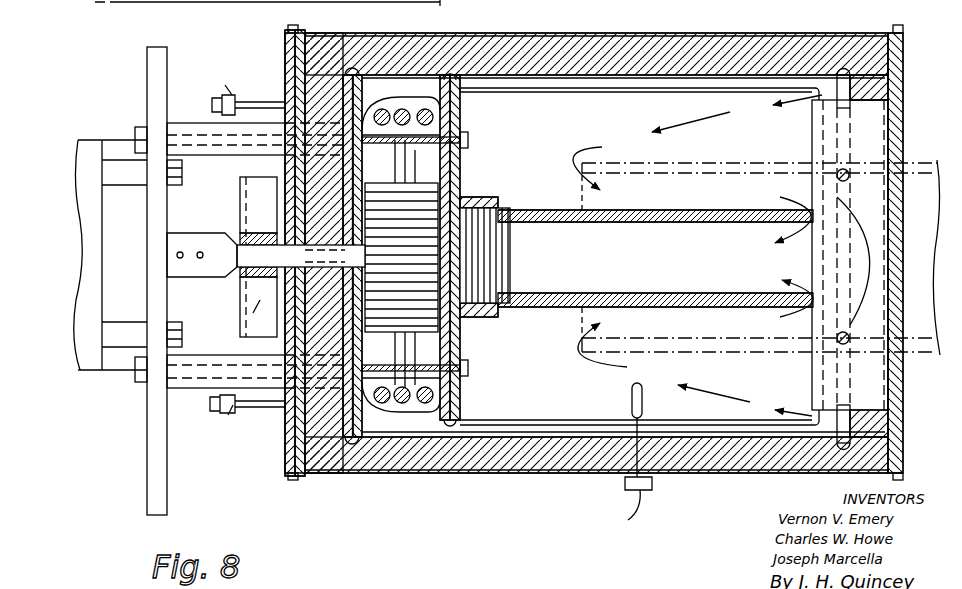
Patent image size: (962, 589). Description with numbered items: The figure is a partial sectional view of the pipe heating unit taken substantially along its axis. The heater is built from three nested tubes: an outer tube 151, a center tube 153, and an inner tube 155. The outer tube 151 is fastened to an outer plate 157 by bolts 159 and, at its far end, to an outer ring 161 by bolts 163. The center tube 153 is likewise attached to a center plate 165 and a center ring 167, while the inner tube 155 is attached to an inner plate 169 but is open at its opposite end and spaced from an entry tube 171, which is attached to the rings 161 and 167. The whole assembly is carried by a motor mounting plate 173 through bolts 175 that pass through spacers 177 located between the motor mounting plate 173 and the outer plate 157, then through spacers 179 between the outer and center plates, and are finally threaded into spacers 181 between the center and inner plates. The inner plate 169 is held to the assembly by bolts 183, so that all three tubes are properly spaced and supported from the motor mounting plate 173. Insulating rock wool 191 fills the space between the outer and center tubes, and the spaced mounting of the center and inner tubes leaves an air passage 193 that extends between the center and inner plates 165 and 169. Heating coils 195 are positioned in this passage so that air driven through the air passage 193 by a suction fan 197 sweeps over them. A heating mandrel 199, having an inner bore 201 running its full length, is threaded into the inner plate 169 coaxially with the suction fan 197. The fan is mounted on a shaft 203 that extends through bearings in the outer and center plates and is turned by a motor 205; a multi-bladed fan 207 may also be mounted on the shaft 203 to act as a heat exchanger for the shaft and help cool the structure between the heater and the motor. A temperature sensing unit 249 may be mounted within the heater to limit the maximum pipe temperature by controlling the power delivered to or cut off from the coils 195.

The outer tube 151 is at (580, 33).
The center tube 153 is at (627, 78).
The inner tube 155 is at (577, 93).
The outer plate 157 is at (285, 48).
The bolts 159 is at (296, 28).
The outer ring 161 is at (896, 66).
The bolts 163 is at (897, 28).
The center plate 165 is at (363, 78).
The center ring 167 is at (852, 97).
The inner plate 169 is at (445, 178).
The entry tube 171 is at (873, 328).
The motor mounting plate 173 is at (160, 58).
The bolts 175 is at (136, 125).
The spacers 177 is at (205, 152).
The spacers 179 is at (285, 180).
The spacers 181 is at (400, 152).
The bolts 183 is at (466, 135).
The rock wool 191 is at (700, 53).
The air passage 193 is at (737, 88).
The heating coils 195 is at (390, 397).
The suction fan 197 is at (418, 207).
The heating mandrel 199 is at (540, 217).
The inner bore 201 is at (653, 242).
The shaft 203 is at (240, 253).
The motor 205 is at (92, 243).
The multi-bladed fan 207 is at (253, 313).
The temperature sensing unit 249 is at (627, 480).